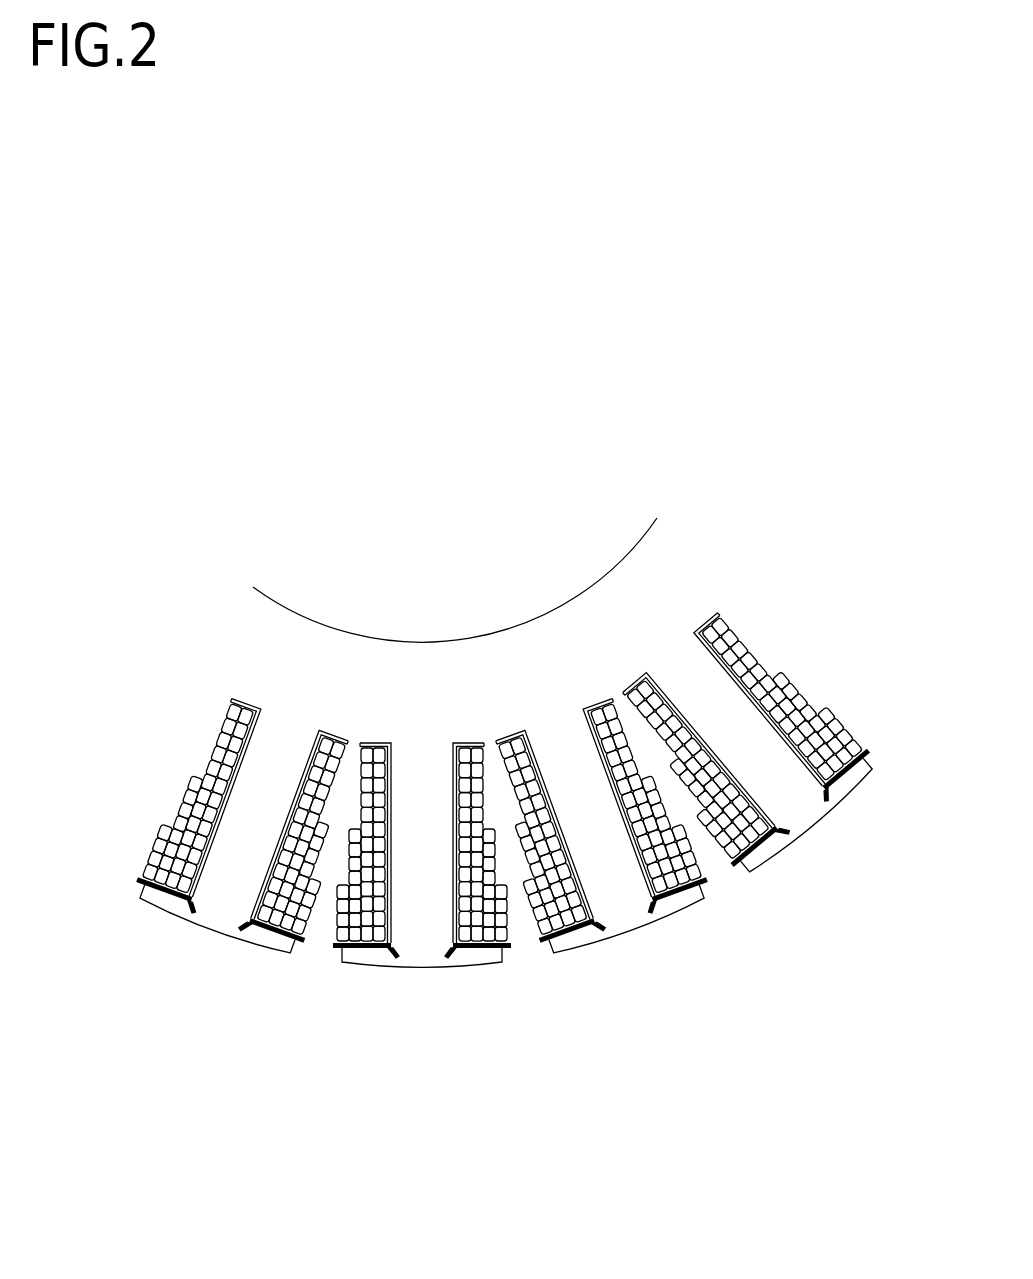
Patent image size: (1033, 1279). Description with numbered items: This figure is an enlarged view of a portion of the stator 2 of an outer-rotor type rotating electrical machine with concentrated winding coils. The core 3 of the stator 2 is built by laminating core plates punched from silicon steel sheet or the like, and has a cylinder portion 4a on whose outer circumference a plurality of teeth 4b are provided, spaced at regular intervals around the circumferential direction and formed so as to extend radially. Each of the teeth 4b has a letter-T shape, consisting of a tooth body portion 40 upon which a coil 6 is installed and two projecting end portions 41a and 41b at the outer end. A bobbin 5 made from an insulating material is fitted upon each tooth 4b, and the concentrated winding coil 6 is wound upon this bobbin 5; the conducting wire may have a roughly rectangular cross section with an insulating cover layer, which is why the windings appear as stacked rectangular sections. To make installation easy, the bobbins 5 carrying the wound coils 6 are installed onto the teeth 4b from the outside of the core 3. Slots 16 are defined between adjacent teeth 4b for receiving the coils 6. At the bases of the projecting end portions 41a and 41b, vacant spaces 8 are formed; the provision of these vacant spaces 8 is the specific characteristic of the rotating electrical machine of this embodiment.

The stator 2 is at (291, 594).
The core 3 is at (520, 617).
The cylinder portion 4a is at (360, 658).
The teeth 4b is at (428, 970).
The tooth body portion 40 is at (425, 835).
The projecting end portion 41a is at (375, 957).
The projecting end portion 41b is at (473, 958).
The bobbin 5 is at (624, 855).
The concentrated winding coil 6 is at (252, 877).
The slots 16 is at (327, 895).
The vacant spaces 8 is at (595, 928).